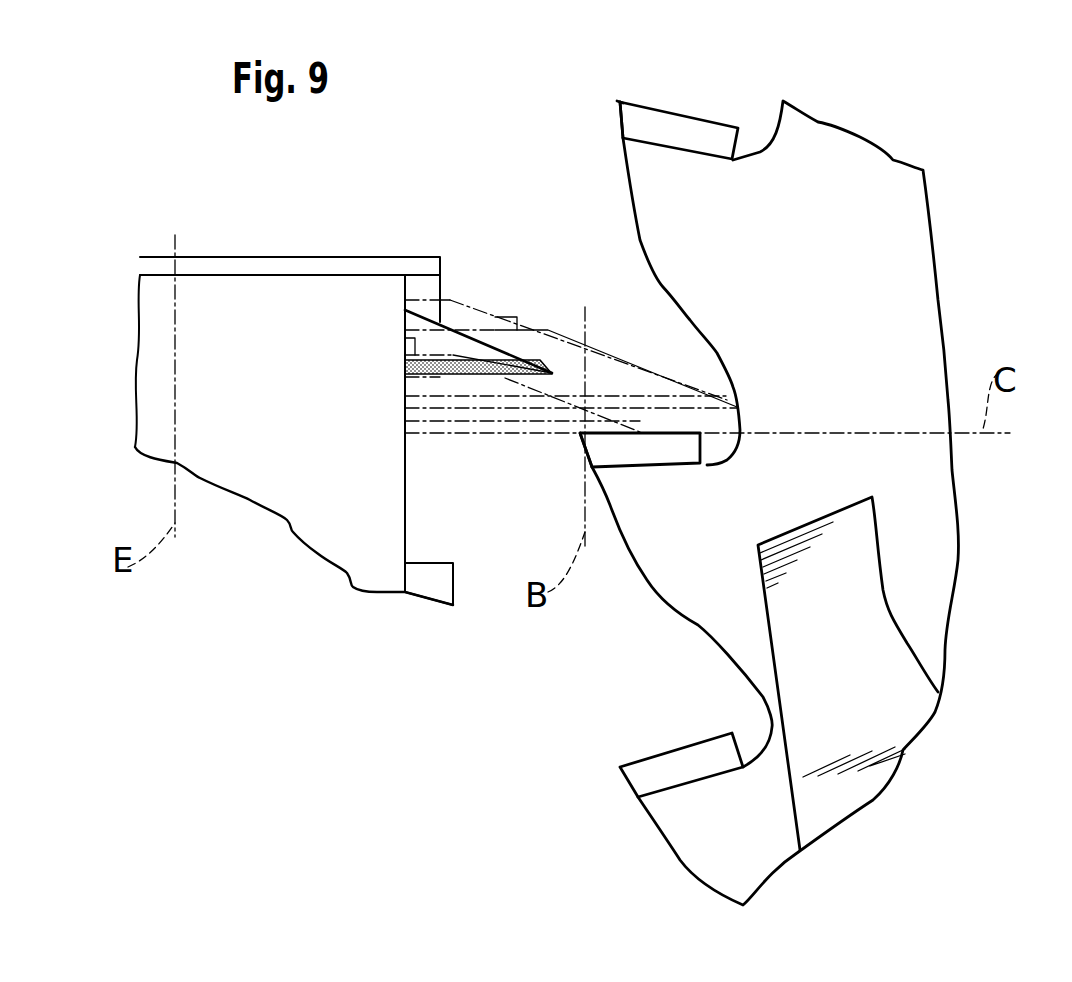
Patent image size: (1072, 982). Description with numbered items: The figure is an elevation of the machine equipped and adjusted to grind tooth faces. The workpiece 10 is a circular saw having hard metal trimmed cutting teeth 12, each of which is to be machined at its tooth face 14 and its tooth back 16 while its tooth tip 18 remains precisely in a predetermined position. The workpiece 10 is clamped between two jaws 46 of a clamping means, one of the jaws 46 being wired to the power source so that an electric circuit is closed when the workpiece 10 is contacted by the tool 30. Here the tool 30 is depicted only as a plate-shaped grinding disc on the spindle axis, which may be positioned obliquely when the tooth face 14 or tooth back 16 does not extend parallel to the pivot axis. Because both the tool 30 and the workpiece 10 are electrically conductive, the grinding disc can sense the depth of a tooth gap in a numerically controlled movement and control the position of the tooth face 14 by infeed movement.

The workpiece 10 is at (922, 272).
The cutting tooth 12 is at (653, 175).
The tooth face 14 is at (680, 113).
The tooth back 16 is at (618, 127).
The tooth tip 18 is at (618, 100).
The tool 30 is at (493, 332).
The jaw 46 is at (880, 645).